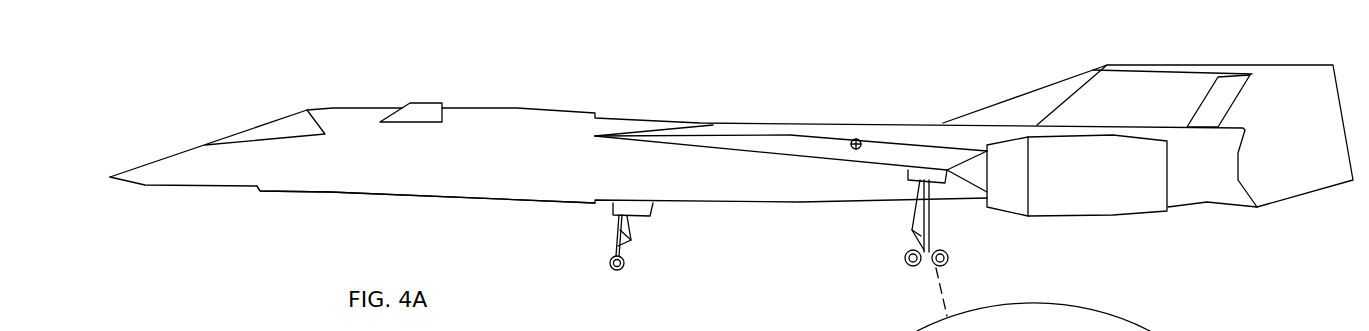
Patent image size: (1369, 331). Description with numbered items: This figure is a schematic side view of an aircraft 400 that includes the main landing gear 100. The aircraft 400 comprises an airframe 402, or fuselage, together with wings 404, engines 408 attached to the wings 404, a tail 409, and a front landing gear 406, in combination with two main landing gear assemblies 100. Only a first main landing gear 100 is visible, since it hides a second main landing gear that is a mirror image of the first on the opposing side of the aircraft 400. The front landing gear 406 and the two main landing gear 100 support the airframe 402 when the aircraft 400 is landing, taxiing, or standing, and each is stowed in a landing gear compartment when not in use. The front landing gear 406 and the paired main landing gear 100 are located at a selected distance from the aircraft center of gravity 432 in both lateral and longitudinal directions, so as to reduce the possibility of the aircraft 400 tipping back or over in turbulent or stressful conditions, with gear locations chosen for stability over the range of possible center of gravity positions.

The aircraft 400 is at (262, 130).
The airframe 402 is at (303, 193).
The wings 404 is at (738, 125).
The front landing gear 406 is at (627, 237).
The engines 408 is at (1108, 217).
The tail 409 is at (1118, 63).
The aircraft center of gravity 432 is at (853, 139).
The main landing gear 100 is at (930, 205).